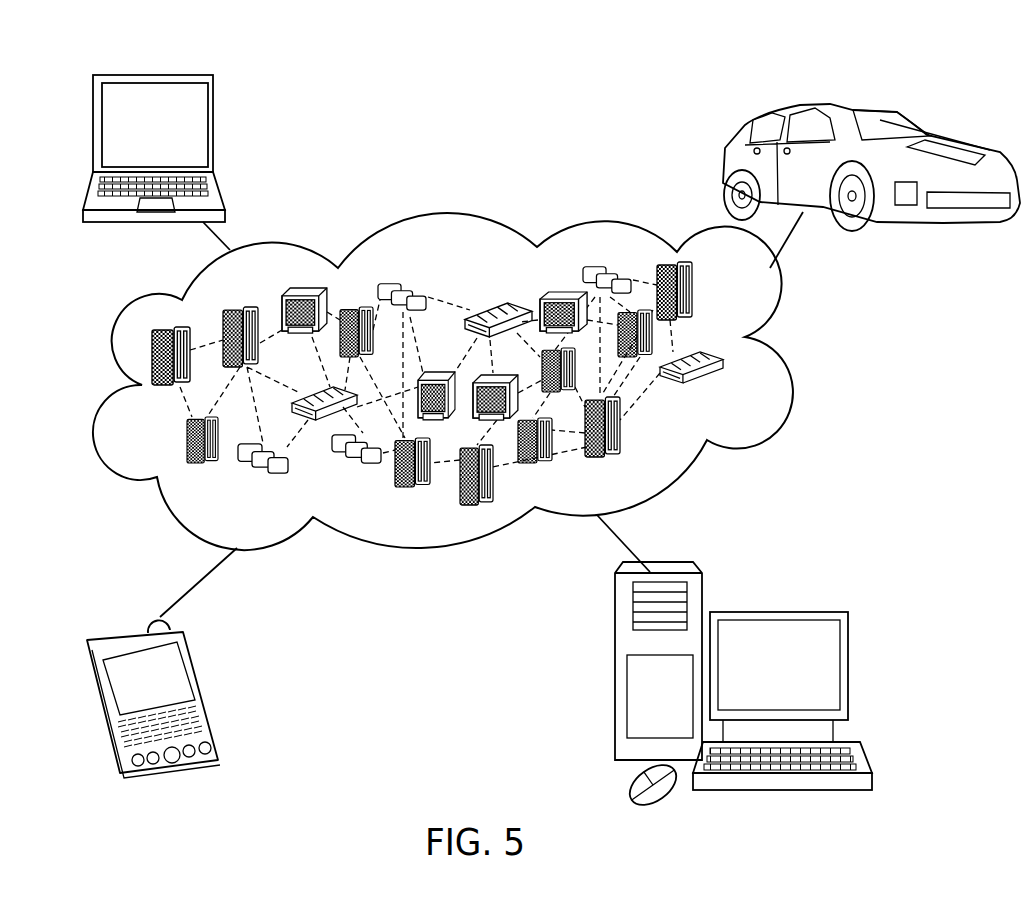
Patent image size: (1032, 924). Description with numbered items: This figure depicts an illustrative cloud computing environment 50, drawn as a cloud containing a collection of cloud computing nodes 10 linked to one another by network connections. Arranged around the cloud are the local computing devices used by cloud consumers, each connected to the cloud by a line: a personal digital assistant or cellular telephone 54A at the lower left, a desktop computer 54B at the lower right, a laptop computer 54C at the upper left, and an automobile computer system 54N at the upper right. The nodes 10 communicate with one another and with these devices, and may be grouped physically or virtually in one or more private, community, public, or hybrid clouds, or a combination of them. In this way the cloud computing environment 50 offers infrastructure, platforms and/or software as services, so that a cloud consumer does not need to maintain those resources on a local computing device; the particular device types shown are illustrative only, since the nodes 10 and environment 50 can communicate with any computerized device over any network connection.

The laptop computer 54C is at (217, 142).
The automobile computer system 54N is at (923, 123).
The personal digital assistant or cellular telephone 54A is at (203, 688).
The desktop computer 54B is at (810, 612).
The cloud computing environment 50 is at (797, 370).
The cloud computing nodes 10 is at (745, 392).